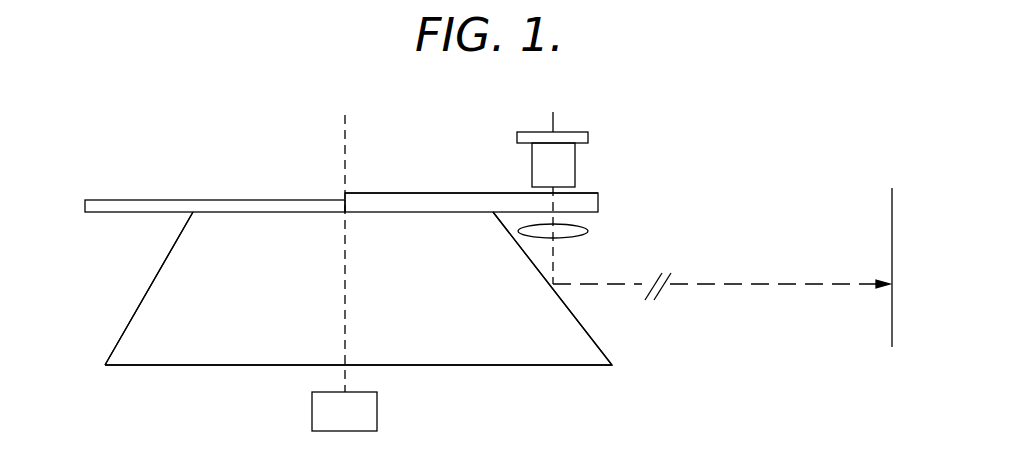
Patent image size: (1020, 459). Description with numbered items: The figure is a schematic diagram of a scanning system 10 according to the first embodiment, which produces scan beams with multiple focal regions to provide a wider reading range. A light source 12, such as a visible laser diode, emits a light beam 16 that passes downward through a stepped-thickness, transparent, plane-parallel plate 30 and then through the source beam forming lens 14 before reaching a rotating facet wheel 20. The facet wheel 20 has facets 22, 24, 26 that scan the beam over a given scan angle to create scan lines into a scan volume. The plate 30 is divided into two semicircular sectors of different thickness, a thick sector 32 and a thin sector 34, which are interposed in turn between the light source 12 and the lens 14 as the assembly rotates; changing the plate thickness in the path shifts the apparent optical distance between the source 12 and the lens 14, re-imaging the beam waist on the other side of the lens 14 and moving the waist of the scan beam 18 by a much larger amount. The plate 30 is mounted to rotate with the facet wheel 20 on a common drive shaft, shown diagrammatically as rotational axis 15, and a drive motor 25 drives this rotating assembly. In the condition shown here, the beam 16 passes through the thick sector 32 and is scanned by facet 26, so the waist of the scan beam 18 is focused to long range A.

The scanning system 10 is at (697, 140).
The light source 12 is at (588, 137).
The source beam forming lens 14 is at (590, 231).
The rotational axis 15 is at (343, 129).
The light beam 16 is at (552, 204).
The scan beam 18 is at (600, 284).
The rotating facet wheel 20 is at (251, 367).
The facet 22 is at (128, 320).
The facet 24 is at (490, 358).
The drive motor 25 is at (344, 411).
The facet 26 is at (600, 347).
The stepped-thickness transparent plane-parallel plate 30 is at (417, 193).
The thick sector 32 is at (486, 193).
The thin sector 34 is at (140, 200).
The long range A is at (892, 254).